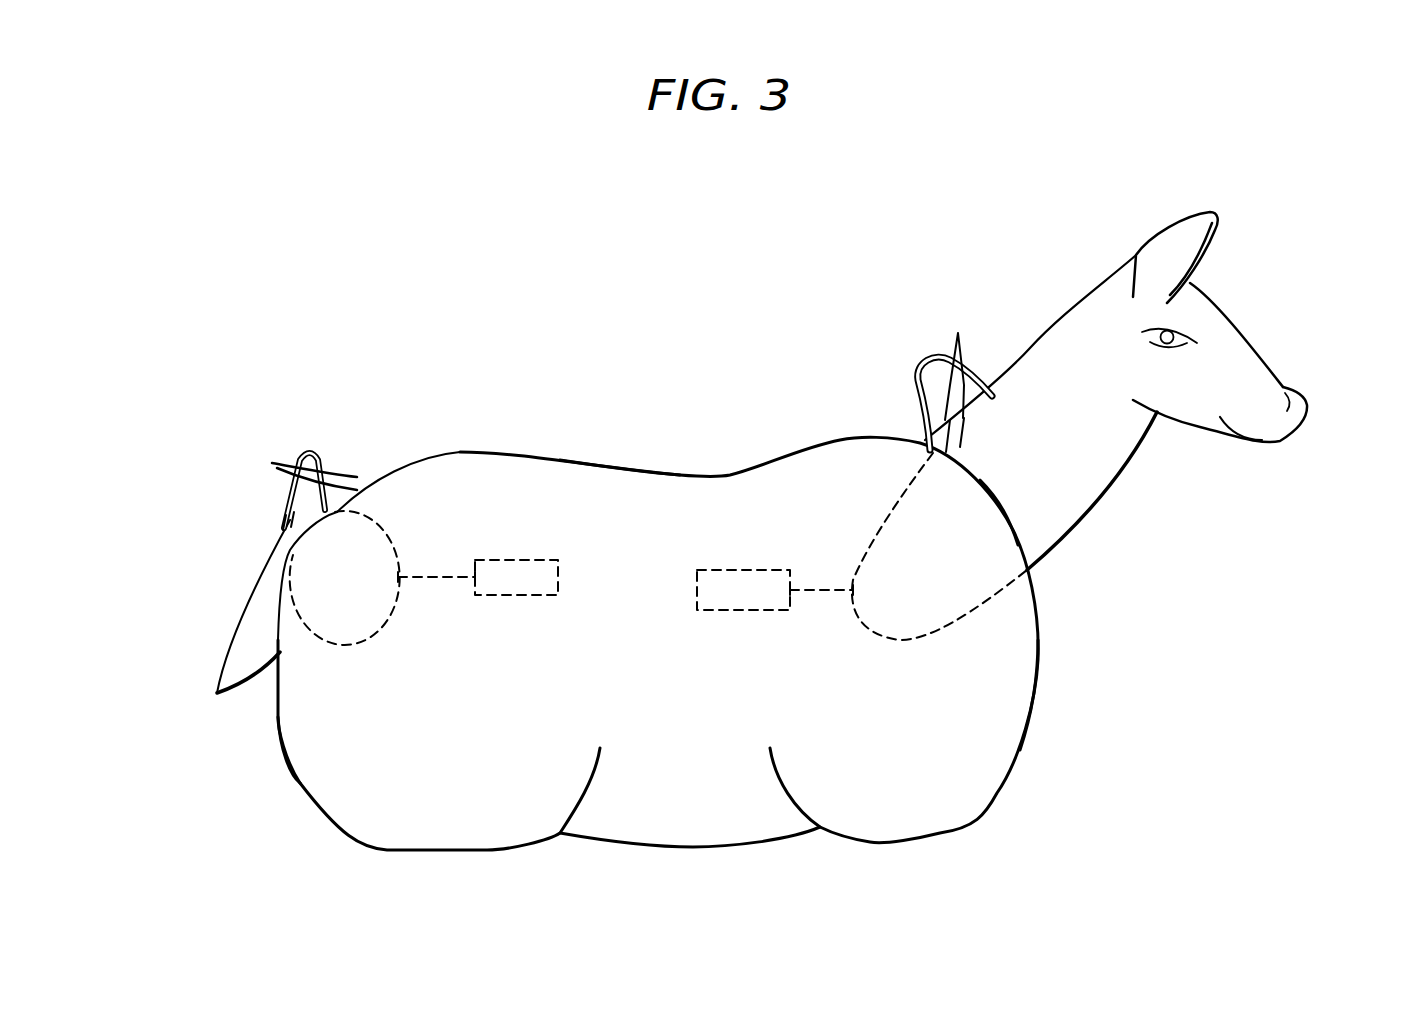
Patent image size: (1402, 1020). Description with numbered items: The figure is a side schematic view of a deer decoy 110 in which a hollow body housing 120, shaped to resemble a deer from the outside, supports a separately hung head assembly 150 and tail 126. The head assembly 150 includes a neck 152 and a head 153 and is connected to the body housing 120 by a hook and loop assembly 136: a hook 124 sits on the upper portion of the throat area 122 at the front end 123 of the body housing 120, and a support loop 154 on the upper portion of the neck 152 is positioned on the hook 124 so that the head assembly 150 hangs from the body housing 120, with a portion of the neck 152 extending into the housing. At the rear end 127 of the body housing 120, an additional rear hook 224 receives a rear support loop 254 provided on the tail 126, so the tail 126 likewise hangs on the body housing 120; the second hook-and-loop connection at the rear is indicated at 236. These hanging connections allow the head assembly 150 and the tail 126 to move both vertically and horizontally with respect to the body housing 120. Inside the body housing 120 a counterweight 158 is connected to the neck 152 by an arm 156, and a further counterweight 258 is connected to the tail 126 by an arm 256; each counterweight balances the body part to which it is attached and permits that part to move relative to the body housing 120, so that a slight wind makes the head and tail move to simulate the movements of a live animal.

The deer decoy 110 is at (530, 388).
The body housing 120 is at (593, 503).
The throat area 122 is at (1056, 546).
The front end 123 is at (1065, 633).
The hook 124 is at (967, 353).
The tail 126 is at (201, 598).
The rear end 127 is at (262, 790).
The hook and loop assembly 136 is at (900, 333).
The head assembly 150 is at (1095, 228).
The neck 152 is at (1120, 477).
The head 153 is at (1275, 309).
The support loop 154 is at (923, 403).
The arm 156 is at (818, 590).
The counterweight 158 is at (733, 612).
The rear hook 224 is at (350, 477).
The rear hook fastener 236 is at (262, 414).
The rear support loop 254 is at (287, 503).
The arm 256 is at (438, 580).
The counterweight 258 is at (517, 595).